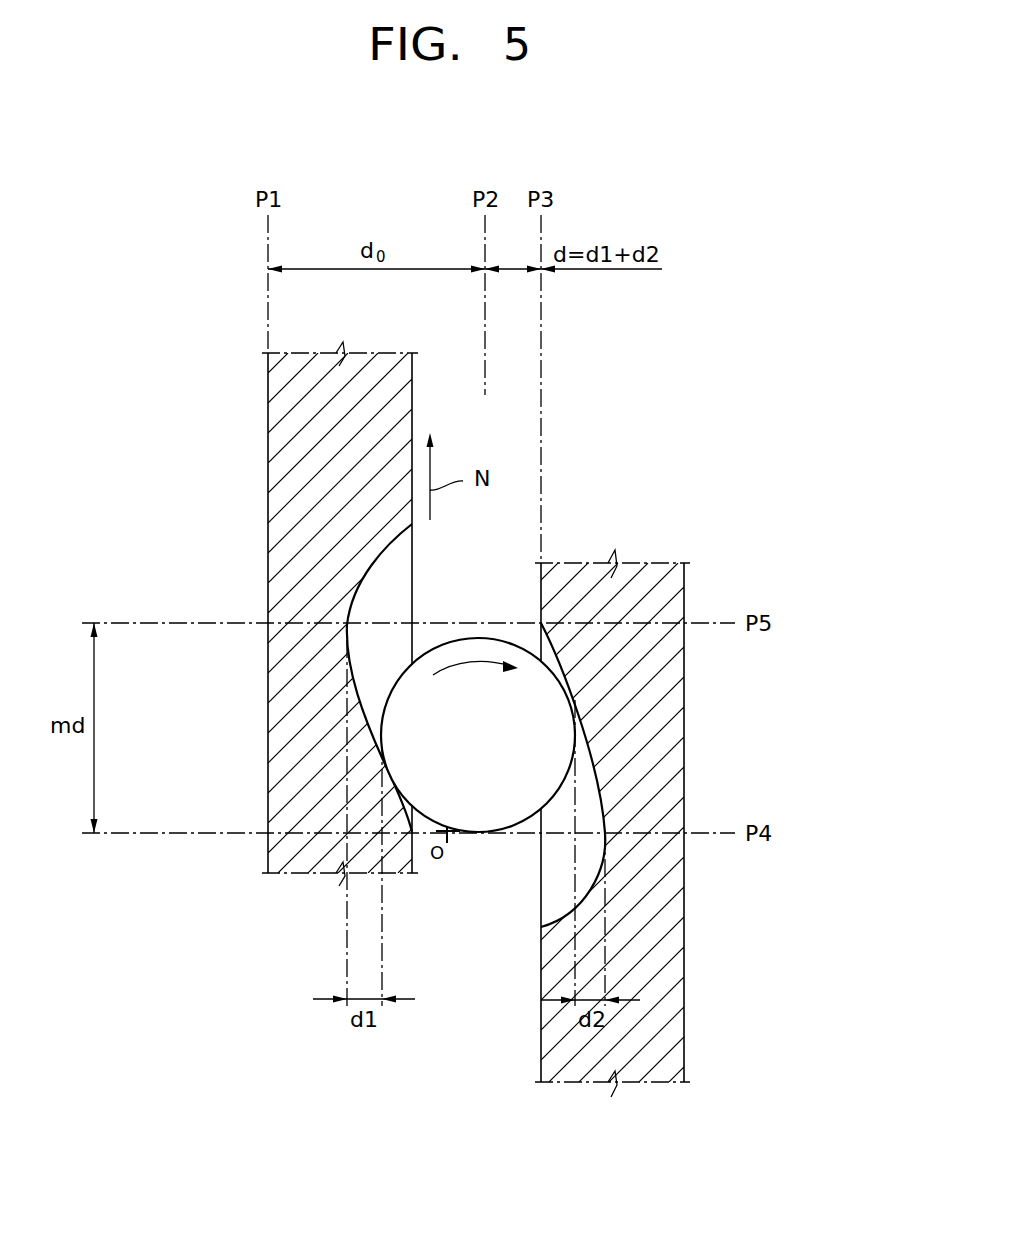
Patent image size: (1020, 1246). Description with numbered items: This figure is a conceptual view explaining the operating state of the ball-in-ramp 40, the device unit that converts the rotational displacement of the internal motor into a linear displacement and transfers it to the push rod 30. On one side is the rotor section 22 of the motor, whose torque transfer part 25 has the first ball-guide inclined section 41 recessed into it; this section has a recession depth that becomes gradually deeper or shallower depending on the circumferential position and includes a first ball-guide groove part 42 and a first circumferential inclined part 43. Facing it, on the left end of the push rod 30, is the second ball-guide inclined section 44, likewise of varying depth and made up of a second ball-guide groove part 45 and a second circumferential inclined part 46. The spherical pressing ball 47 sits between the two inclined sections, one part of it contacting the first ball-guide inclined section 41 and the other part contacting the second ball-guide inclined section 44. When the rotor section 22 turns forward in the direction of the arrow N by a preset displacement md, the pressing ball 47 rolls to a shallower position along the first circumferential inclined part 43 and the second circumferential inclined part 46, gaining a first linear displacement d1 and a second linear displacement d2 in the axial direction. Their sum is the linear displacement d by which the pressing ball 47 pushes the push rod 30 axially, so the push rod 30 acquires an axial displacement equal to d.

The rotor section 22 is at (282, 614).
The torque transfer part 25 is at (300, 455).
The push rod 30 is at (668, 975).
The ball-in-ramp 40 is at (437, 664).
The first ball-guide inclined section 41 is at (270, 674).
The first ball-guide groove part 42 is at (390, 612).
The first circumferential inclined part 43 is at (370, 712).
The second ball-guide inclined section 44 is at (679, 775).
The second ball-guide groove part 45 is at (560, 873).
The second circumferential inclined part 46 is at (565, 678).
The pressing ball 47 is at (473, 767).